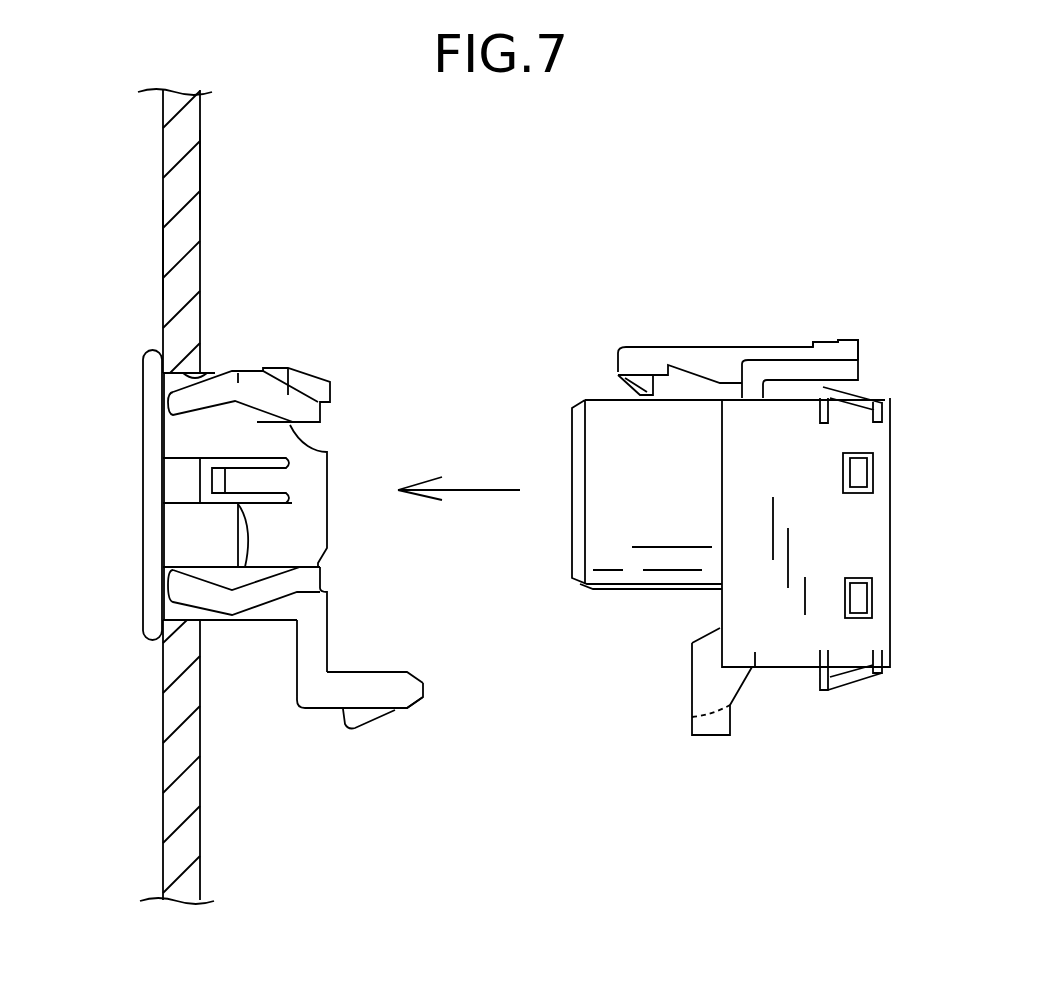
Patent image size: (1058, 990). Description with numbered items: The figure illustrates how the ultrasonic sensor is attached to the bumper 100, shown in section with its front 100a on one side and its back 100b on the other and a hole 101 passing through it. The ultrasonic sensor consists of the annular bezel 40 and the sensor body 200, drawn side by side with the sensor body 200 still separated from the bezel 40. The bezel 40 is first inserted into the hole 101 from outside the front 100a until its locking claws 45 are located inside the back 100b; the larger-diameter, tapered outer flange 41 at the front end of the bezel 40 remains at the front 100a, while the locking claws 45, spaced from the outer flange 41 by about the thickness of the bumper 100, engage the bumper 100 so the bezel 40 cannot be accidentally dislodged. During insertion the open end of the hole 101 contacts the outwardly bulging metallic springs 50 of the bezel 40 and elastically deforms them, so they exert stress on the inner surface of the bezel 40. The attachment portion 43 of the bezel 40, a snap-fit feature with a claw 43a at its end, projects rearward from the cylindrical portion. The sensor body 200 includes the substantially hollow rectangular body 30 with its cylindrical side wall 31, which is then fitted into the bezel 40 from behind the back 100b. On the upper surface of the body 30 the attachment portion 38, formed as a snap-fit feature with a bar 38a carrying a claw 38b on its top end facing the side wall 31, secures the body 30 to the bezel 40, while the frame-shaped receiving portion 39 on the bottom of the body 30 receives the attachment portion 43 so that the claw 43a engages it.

The bumper 100 is at (170, 763).
The front of the bumper 100a is at (160, 248).
The back of the bumper 100b is at (202, 178).
The hole of the bumper 101 is at (205, 373).
The bezel 40 is at (391, 828).
The outer flange 41 is at (147, 372).
The attachment portion of the bezel 43 is at (362, 672).
The claw of the attachment portion 43a is at (383, 717).
The locking claws 45 is at (215, 482).
The metallic springs 50 is at (238, 372).
The sensor body 200 is at (599, 820).
The body 30 is at (890, 528).
The side wall 31 is at (632, 572).
The attachment portion of the body 38 is at (650, 347).
The bar 38a is at (740, 347).
The claw of the attachment portion 38b is at (632, 388).
The receiving portion 39 is at (710, 735).